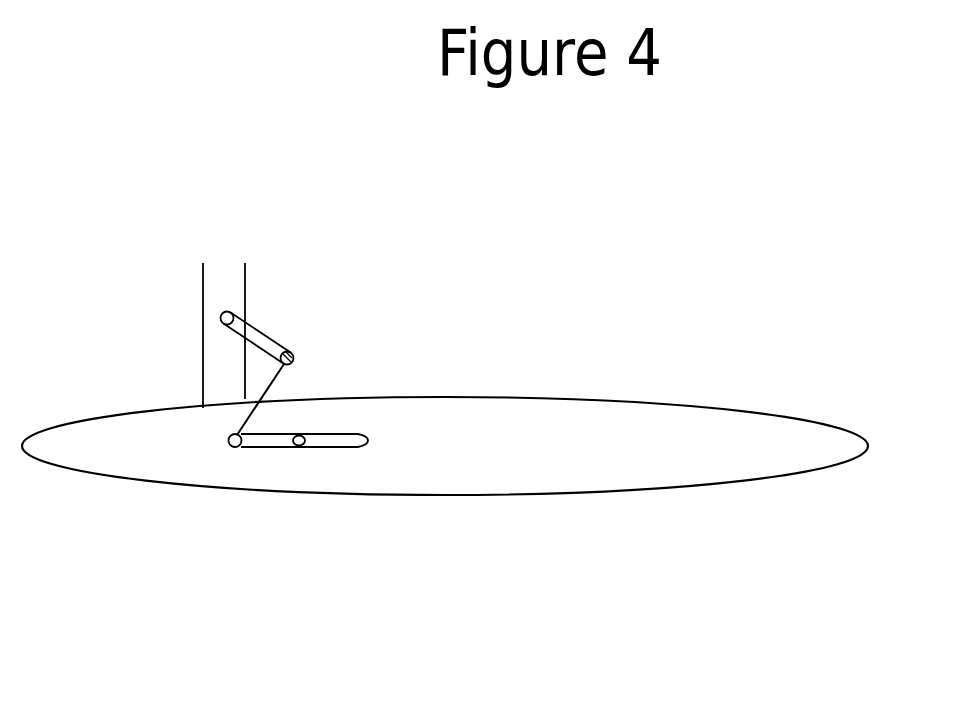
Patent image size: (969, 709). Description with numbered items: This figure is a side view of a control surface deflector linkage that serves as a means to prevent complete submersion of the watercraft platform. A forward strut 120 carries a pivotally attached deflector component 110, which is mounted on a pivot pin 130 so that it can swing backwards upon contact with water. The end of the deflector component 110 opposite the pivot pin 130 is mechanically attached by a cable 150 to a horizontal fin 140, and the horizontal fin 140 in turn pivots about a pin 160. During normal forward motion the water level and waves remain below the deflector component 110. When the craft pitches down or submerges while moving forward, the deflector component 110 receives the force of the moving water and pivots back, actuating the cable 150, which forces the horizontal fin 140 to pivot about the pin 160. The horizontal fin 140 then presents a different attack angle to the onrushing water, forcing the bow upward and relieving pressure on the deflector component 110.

The deflector component 110 is at (282, 325).
The forward strut 120 is at (263, 275).
The pivot pin 130 is at (220, 321).
The horizontal fin 140 is at (330, 458).
The cable 150 is at (262, 413).
The pin 160 is at (298, 452).